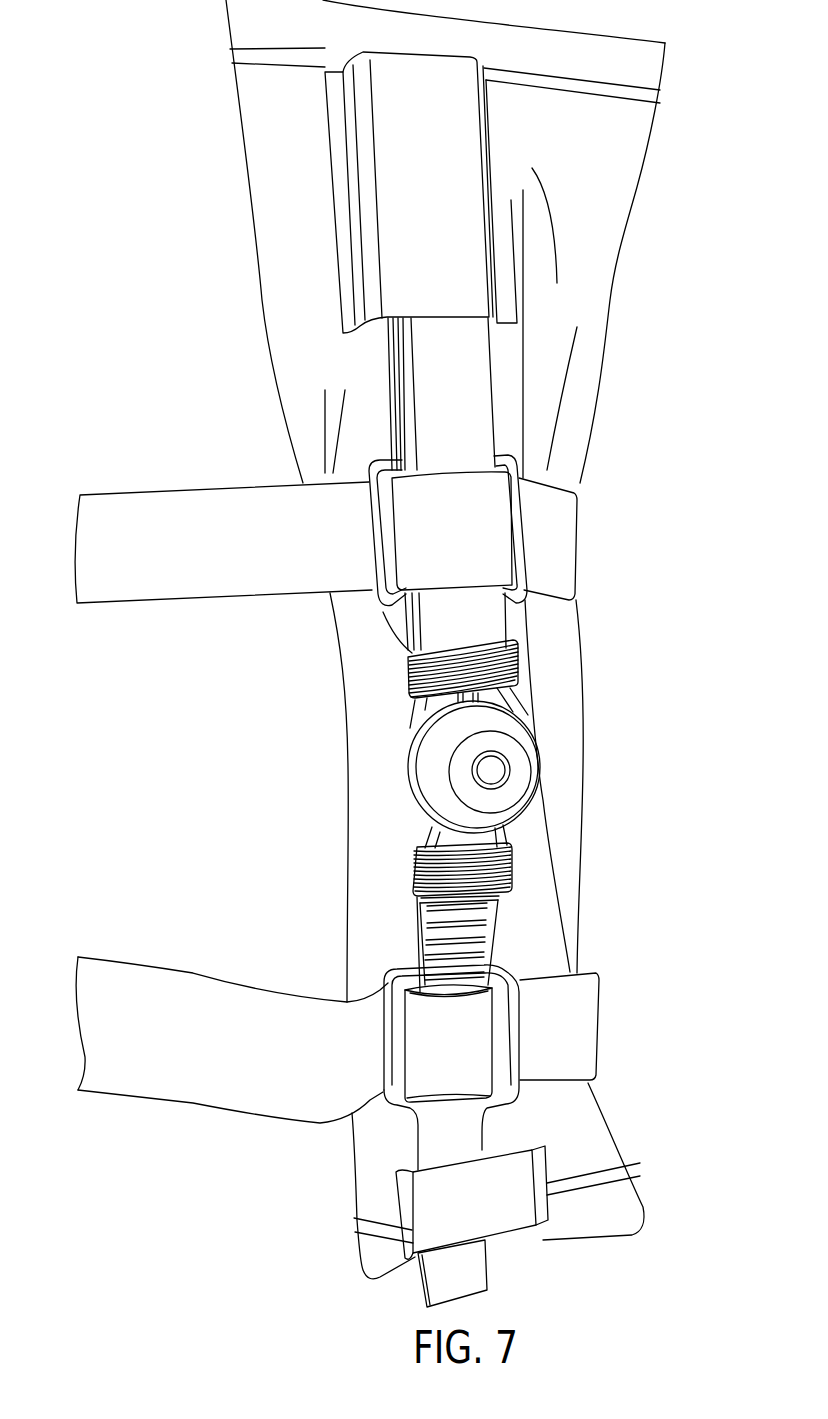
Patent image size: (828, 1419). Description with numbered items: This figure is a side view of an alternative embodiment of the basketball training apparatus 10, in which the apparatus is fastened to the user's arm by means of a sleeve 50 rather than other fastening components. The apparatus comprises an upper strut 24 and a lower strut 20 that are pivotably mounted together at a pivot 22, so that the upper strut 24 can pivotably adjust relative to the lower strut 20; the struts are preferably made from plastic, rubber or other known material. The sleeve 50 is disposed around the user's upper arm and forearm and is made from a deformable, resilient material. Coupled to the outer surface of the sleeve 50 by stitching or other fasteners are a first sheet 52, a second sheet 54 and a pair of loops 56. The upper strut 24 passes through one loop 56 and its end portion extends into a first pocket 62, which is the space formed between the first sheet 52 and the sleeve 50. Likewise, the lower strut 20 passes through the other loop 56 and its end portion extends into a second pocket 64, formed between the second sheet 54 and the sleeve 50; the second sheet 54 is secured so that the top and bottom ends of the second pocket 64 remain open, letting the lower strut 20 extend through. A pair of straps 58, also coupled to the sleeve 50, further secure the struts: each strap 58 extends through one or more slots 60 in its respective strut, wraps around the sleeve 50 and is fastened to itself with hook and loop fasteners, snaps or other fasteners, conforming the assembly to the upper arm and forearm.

The basketball training apparatus 10 is at (150, 1172).
The lower strut 20 is at (470, 937).
The pivot 22 is at (488, 770).
The upper strut 24 is at (472, 405).
The sleeve 50 is at (617, 177).
The first sheet 52 is at (467, 147).
The second sheet 54 is at (507, 1207).
The loops 56 is at (515, 668).
The straps 58 is at (132, 587).
The slots 60 is at (407, 597).
The first pocket 62 is at (495, 327).
The second pocket 64 is at (512, 1150).